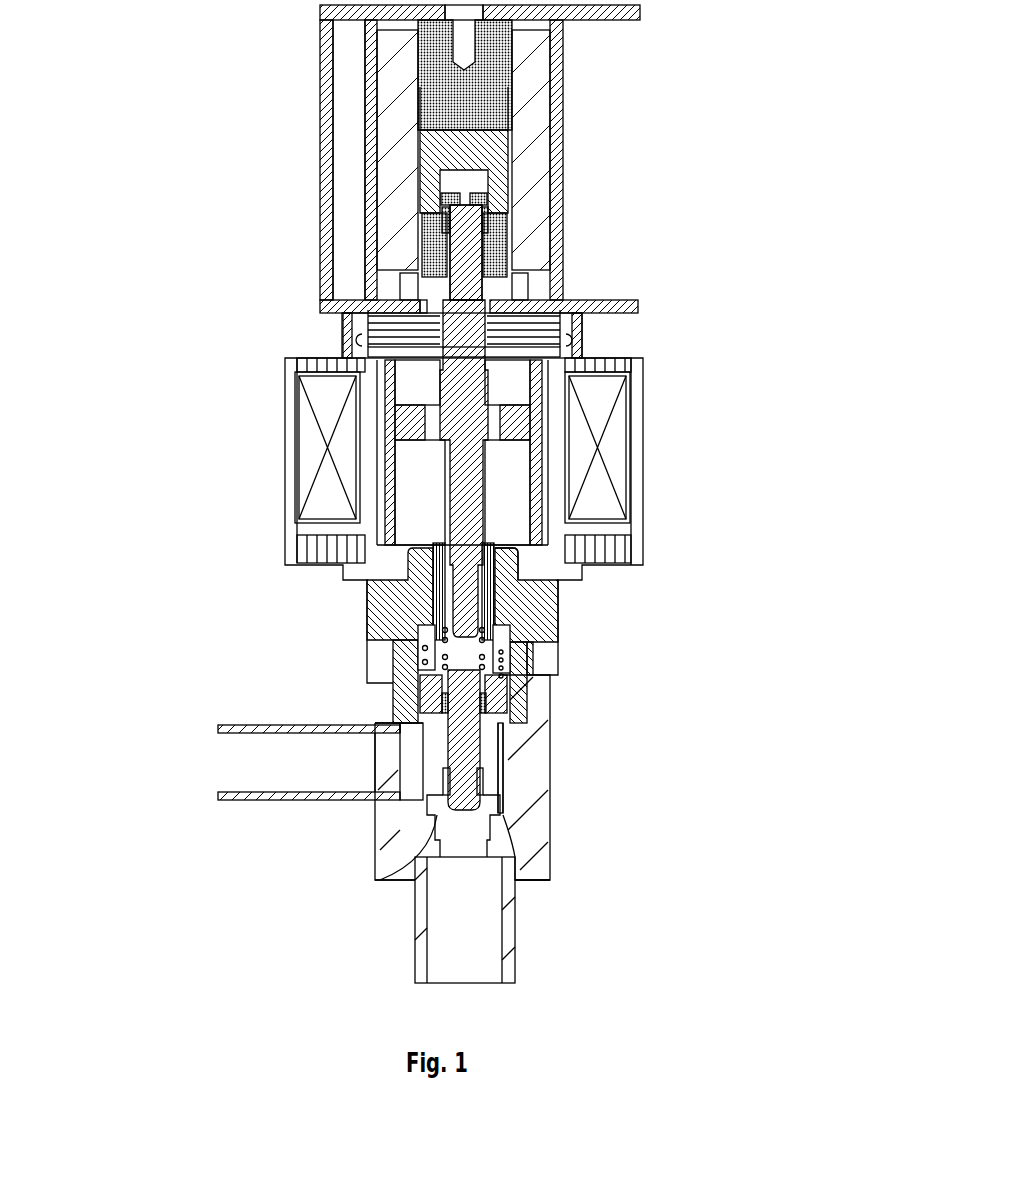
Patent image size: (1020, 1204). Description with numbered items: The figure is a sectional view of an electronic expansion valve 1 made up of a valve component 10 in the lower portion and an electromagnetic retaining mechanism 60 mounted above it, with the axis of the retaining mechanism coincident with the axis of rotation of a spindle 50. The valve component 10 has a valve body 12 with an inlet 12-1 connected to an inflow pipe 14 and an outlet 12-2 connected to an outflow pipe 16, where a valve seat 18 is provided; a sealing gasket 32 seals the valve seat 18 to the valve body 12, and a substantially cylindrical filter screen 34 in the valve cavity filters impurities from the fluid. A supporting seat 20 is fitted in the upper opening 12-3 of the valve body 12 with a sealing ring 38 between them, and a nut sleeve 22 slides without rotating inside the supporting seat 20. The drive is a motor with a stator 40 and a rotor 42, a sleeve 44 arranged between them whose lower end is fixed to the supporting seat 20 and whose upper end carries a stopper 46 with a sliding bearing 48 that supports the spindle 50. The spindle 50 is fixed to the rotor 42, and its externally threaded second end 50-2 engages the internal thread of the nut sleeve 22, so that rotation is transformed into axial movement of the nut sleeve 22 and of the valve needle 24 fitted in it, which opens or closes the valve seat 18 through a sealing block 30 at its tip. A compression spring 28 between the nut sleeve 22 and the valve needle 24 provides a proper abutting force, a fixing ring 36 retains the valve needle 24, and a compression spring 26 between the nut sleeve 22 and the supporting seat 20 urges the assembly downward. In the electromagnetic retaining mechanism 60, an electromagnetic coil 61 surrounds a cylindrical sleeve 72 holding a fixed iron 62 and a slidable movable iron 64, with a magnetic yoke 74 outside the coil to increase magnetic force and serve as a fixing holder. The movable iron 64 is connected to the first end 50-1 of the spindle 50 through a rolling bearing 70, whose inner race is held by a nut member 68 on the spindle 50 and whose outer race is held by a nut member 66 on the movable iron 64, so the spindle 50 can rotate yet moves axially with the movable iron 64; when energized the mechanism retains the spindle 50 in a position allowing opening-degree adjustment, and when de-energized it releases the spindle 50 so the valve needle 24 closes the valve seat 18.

The electronic expansion valve 1 is at (262, 953).
The valve component 10 is at (136, 600).
The valve body 12 is at (548, 797).
The inlet 12-1 is at (362, 800).
The outlet 12-2 is at (548, 870).
The upper opening 12-3 is at (540, 658).
The inflow pipe 14 is at (250, 800).
The outflow pipe 16 is at (515, 932).
The valve seat 18 is at (500, 835).
The supporting seat 20 is at (550, 606).
The nut sleeve 22 is at (465, 567).
The valve needle 24 is at (500, 733).
The compression spring 26 is at (425, 662).
The compression spring 28 is at (423, 633).
The sealing block 30 is at (447, 779).
The sealing gasket 32 is at (386, 880).
The filter screen 34 is at (530, 765).
The fixing ring 36 is at (545, 698).
The sealing ring 38 is at (370, 720).
The stator 40 is at (598, 402).
The rotor 42 is at (538, 433).
The sleeve 44 is at (372, 510).
The stopper 46 is at (548, 322).
The sliding bearing 48 is at (368, 326).
The spindle 50 is at (458, 447).
The first end of the spindle 50-1 is at (457, 245).
The second end of the spindle 50-2 is at (440, 562).
The electromagnetic retaining mechanism 60 is at (203, 178).
The electromagnetic coil 61 is at (395, 100).
The fixed iron 62 is at (497, 62).
The movable iron 64 is at (477, 172).
The nut member 66 is at (580, 290).
The nut member 68 is at (487, 205).
The rolling bearing 70 is at (508, 252).
The sleeve 72 is at (507, 125).
The magnetic yoke 74 is at (557, 16).